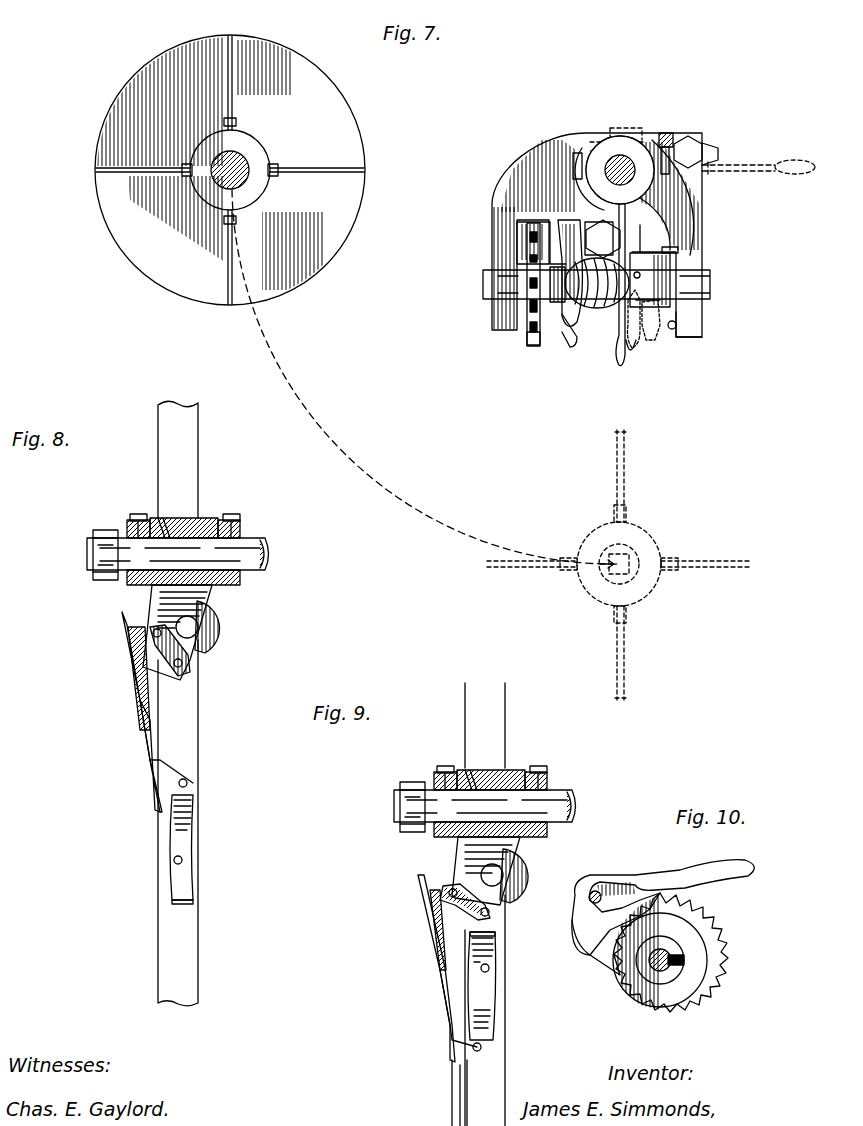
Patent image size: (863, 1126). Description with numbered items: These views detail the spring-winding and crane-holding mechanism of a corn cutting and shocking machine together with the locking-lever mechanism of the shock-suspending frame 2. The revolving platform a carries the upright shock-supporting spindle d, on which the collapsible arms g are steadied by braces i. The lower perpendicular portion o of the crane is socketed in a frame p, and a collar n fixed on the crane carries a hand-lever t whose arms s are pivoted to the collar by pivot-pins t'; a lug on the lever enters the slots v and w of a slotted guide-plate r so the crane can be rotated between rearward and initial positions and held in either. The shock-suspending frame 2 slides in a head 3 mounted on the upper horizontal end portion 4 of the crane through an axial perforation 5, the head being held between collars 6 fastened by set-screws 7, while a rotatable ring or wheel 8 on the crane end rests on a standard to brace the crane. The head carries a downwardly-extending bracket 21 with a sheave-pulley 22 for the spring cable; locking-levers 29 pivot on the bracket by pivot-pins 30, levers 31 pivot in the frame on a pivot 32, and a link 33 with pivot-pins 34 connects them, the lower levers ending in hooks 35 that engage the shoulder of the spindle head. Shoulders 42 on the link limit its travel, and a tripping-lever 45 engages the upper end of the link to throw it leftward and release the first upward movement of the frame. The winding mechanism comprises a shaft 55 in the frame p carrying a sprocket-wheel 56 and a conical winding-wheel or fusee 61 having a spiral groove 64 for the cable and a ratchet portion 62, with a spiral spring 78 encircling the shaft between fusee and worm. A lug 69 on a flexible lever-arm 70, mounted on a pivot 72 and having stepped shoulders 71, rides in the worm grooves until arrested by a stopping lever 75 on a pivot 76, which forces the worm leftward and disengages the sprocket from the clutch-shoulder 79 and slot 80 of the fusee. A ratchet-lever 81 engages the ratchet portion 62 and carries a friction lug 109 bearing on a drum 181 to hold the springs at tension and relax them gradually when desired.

In FIG. 7, the revolving platform a is at (118, 104).
In FIG. 7, the collapsible arms g is at (230, 73).
In FIG. 7, the braces i is at (222, 124).
In FIG. 7, the shock-supporting core or spindle d is at (232, 163).
In FIG. 7, the pivot-pins t' is at (604, 135).
In FIG. 7, the arms of the hand-lever s is at (597, 147).
In FIG. 7, the lower perpendicular portion of the crane o is at (620, 168).
In FIG. 7, the collar n is at (620, 178).
In FIG. 7, the pivot 72 is at (689, 136).
In FIG. 7, the slot w is at (710, 171).
In FIG. 7, the friction lever or lug 109 is at (528, 226).
In FIG. 10, the friction lever or lug 109 is at (590, 950).
In FIG. 7, the ratchet-lever 81 is at (566, 222).
In FIG. 10, the ratchet-lever 81 is at (665, 876).
In FIG. 7, the slotted guide-plate r is at (643, 195).
In FIG. 7, the slot v is at (680, 249).
In FIG. 7, the spiral spring 78 is at (672, 262).
In FIG. 7, the shaft 55 is at (484, 286).
In FIG. 10, the shaft 55 is at (668, 966).
In FIG. 7, the lug 69 is at (640, 276).
In FIG. 7, the clutch-shoulder 79 is at (528, 290).
In FIG. 10, the clutch-shoulder 79 is at (670, 945).
In FIG. 7, the stopping lever 75 is at (675, 323).
In FIG. 7, the frame p is at (495, 325).
In FIG. 7, the sprocket-wheel 56 is at (530, 338).
In FIG. 7, the hand-lever t is at (607, 285).
In FIG. 7, the spiral groove 64 is at (590, 318).
In FIG. 7, the conical winding-wheel or fusee 61 is at (566, 342).
In FIG. 7, the lever-arm 70 is at (640, 342).
In FIG. 7, the stepped shoulders 71 is at (660, 330).
In FIG. 7, the pivot 76 is at (702, 337).
In FIG. 8, the shock-suspending frame 2 is at (192, 472).
In FIG. 9, the shock-suspending frame 2 is at (500, 702).
In FIG. 8, the head 3 is at (198, 518).
In FIG. 9, the head 3 is at (490, 788).
In FIG. 8, the upper horizontal end portion of the crane 4 is at (250, 536).
In FIG. 9, the upper horizontal end portion of the crane 4 is at (474, 789).
In FIG. 8, the axial perforation 5 is at (160, 518).
In FIG. 9, the axial perforation 5 is at (456, 756).
In FIG. 8, the collars 6 is at (127, 583).
In FIG. 9, the collars 6 is at (482, 813).
In FIG. 8, the set-screws 7 is at (137, 514).
In FIG. 9, the set-screws 7 is at (489, 762).
In FIG. 8, the rotatable ring or wheel 8 is at (100, 530).
In FIG. 9, the rotatable ring or wheel 8 is at (404, 792).
In FIG. 8, the downwardly-extending bracket 21 is at (160, 667).
In FIG. 9, the downwardly-extending bracket 21 is at (462, 880).
In FIG. 8, the sheave-pulley 22 is at (210, 640).
In FIG. 9, the sheave-pulley 22 is at (515, 895).
In FIG. 8, the locking-levers 29 is at (190, 647).
In FIG. 9, the locking-levers 29 is at (445, 917).
In FIG. 8, the pivot-pin 30 is at (183, 664).
In FIG. 9, the pivot-pin 30 is at (490, 913).
In FIG. 8, the levers 31 is at (194, 820).
In FIG. 9, the levers 31 is at (497, 1000).
In FIG. 8, the pivot 32 is at (183, 860).
In FIG. 9, the pivot 32 is at (490, 969).
In FIG. 8, the link 33 is at (140, 720).
In FIG. 9, the link 33 is at (440, 977).
In FIG. 8, the pivot-pins 34 is at (152, 636).
In FIG. 9, the pivot-pins 34 is at (448, 895).
In FIG. 8, the hook or shoulder 35 is at (194, 903).
In FIG. 9, the hook or shoulder 35 is at (497, 937).
In FIG. 8, the shoulders 42 is at (123, 618).
In FIG. 9, the shoulders 42 is at (418, 882).
In FIG. 9, the tripping-lever 45 is at (452, 1102).
In FIG. 10, the ratchet portion 62 is at (628, 1017).
In FIG. 10, the slot 80 is at (684, 960).
In FIG. 10, the drum 181 is at (678, 995).